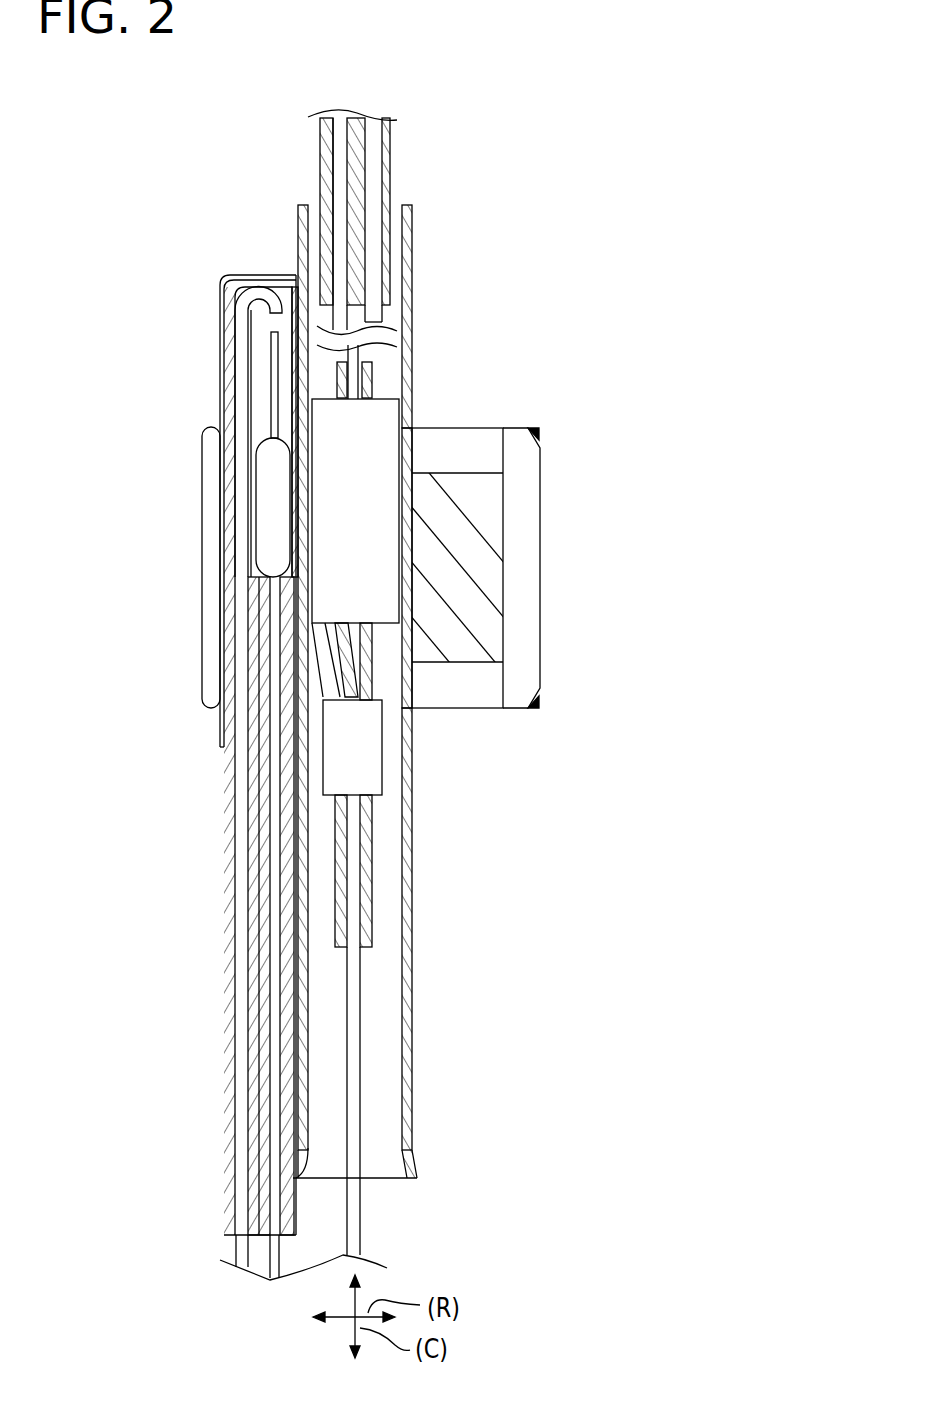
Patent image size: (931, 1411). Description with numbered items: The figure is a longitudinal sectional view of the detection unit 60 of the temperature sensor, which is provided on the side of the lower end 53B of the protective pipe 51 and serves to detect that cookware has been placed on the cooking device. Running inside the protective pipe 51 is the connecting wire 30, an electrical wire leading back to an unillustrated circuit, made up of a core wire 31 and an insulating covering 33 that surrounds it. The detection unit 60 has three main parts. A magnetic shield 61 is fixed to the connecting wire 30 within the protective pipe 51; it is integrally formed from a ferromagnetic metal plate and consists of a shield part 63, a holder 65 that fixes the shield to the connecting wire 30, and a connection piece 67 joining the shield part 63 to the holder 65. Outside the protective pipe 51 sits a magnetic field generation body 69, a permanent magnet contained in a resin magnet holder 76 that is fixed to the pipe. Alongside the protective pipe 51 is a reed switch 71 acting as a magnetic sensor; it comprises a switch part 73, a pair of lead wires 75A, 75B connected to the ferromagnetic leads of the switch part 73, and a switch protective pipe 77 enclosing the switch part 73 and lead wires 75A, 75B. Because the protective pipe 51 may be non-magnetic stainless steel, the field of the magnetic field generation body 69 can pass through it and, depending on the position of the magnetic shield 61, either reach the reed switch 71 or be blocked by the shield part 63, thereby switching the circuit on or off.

The connecting wire 30 is at (397, 133).
The core wire 31 is at (360, 158).
The insulating covering 33 is at (391, 165).
The protective pipe 51 is at (413, 288).
The lower end 53B is at (413, 1180).
The detection unit 60 is at (595, 511).
The magnetic shield 61 is at (413, 690).
The shield part 63 is at (406, 443).
The holder 65 is at (383, 738).
The connection piece 67 is at (386, 665).
The magnetic field generation body 69 is at (503, 618).
The reed switch 71 is at (207, 318).
The switch part 73 is at (268, 407).
The lead wire 75A is at (272, 826).
The lead wire 75B is at (236, 757).
The magnet holder 76 is at (540, 568).
The switch protective pipe 77 is at (221, 288).